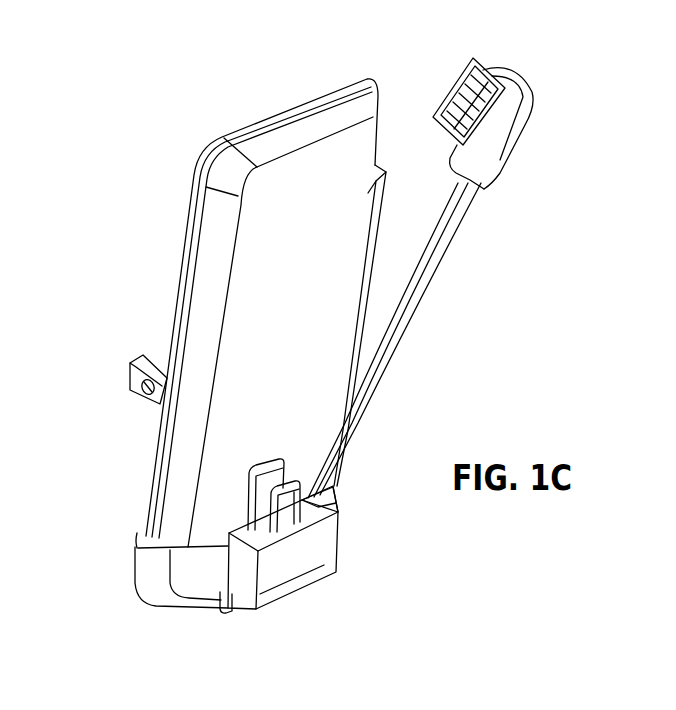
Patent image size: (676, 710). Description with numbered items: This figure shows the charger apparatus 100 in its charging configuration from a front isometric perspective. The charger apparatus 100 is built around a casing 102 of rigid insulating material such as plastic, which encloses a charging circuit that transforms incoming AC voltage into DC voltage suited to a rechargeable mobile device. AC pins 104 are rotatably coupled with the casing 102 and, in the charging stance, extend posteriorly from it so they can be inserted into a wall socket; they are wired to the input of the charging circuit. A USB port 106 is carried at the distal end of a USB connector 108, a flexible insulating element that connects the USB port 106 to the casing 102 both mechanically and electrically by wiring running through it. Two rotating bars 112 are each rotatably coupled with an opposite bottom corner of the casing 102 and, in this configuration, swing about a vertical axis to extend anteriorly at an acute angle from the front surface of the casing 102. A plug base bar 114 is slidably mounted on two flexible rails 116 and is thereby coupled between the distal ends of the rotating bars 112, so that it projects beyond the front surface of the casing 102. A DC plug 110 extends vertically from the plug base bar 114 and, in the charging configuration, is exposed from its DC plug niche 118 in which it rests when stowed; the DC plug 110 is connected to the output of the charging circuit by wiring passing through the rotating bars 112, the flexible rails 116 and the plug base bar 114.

The charger apparatus 100 is at (220, 78).
The casing 102 is at (180, 271).
The AC pins 104 is at (128, 370).
The USB port 106 is at (457, 87).
The USB connector 108 is at (518, 132).
The DC plug 110 is at (285, 522).
The rotating bars 112 is at (133, 575).
The plug base bar 114 is at (320, 577).
The flexible rails 116 is at (228, 590).
The DC plug niche 118 is at (236, 488).